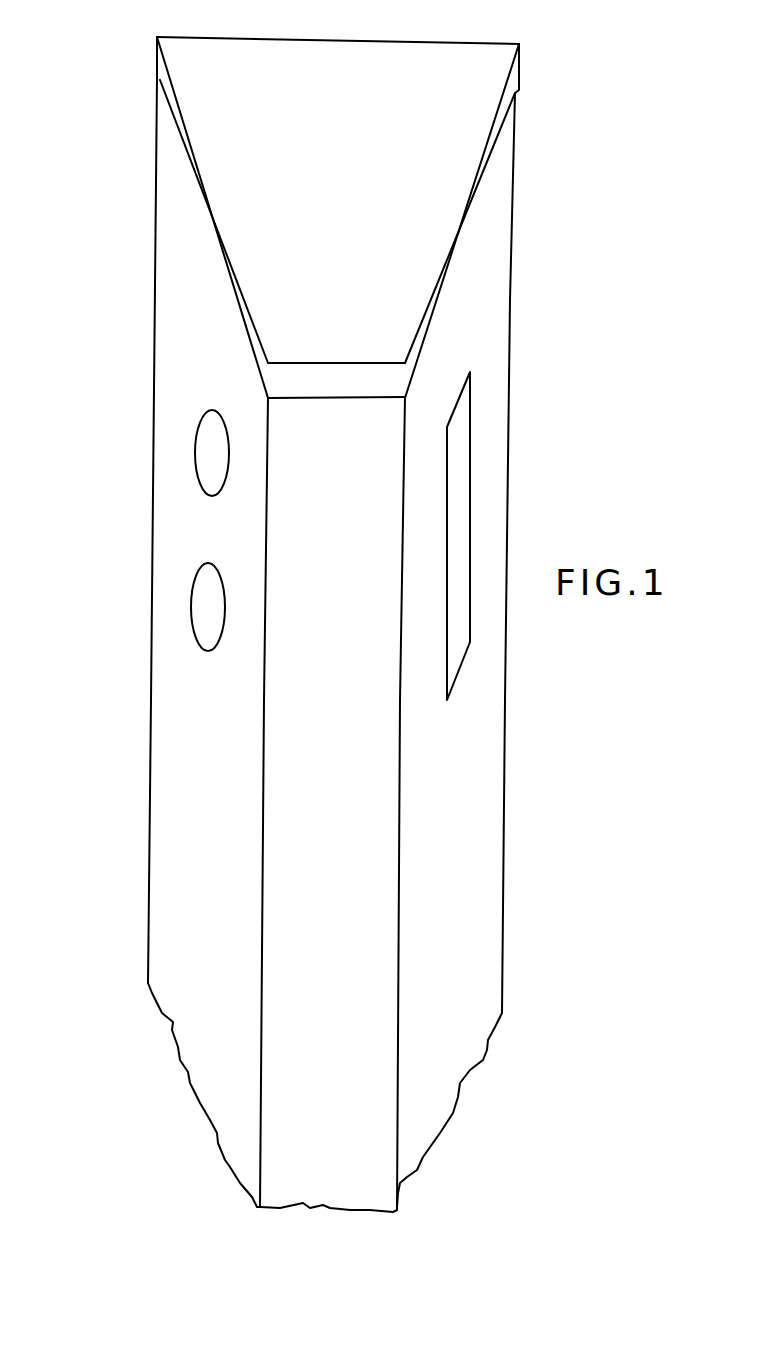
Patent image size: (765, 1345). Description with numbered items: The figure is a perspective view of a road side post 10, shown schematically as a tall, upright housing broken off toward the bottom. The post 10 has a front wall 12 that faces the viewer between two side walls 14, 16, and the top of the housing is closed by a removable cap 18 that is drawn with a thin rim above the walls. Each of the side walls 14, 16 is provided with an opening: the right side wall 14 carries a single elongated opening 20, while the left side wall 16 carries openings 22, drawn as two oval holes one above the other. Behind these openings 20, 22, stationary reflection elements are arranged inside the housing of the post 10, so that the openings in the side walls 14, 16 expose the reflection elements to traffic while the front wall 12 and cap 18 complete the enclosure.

The road side post 10 is at (489, 301).
The front wall 12 is at (340, 709).
The side wall 14 is at (480, 758).
The side wall 16 is at (168, 785).
The removable cap 18 is at (330, 68).
The opening 20 is at (455, 493).
The opening 22 is at (213, 598).